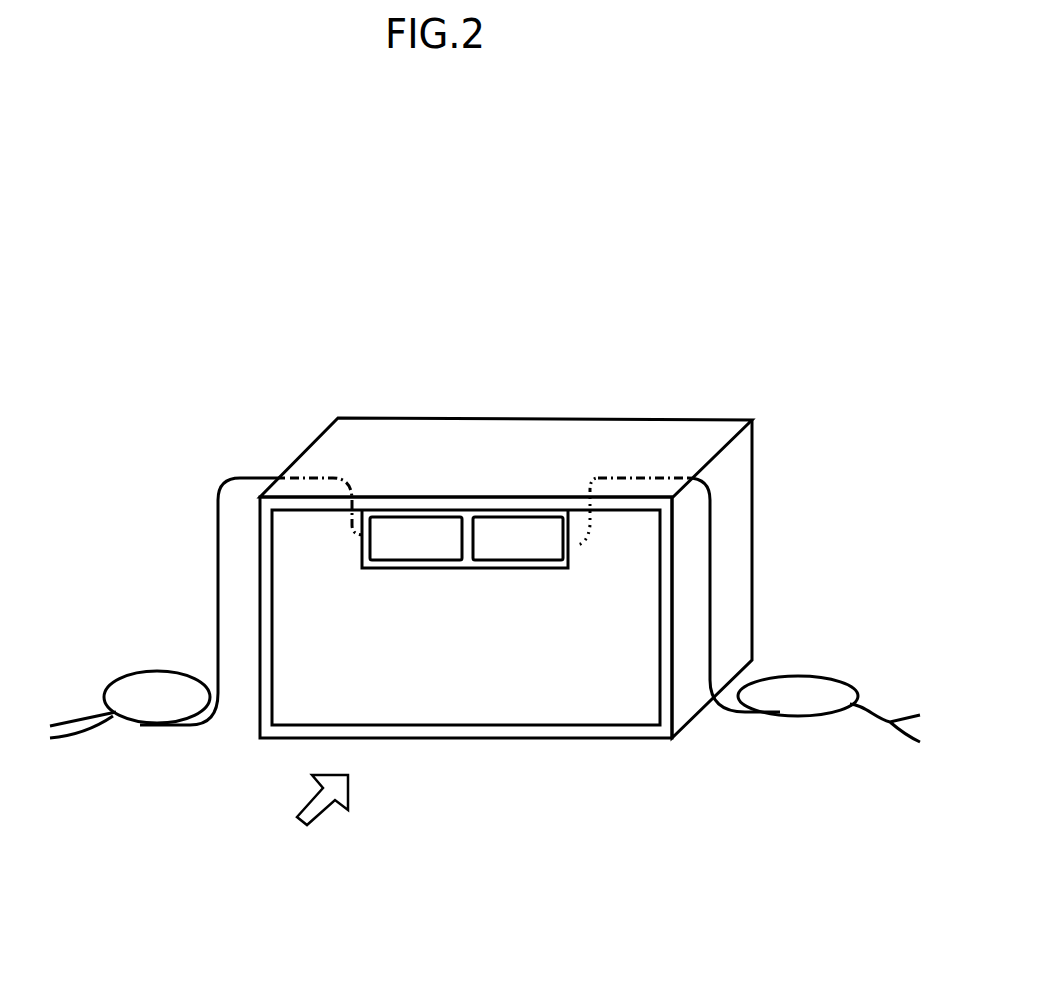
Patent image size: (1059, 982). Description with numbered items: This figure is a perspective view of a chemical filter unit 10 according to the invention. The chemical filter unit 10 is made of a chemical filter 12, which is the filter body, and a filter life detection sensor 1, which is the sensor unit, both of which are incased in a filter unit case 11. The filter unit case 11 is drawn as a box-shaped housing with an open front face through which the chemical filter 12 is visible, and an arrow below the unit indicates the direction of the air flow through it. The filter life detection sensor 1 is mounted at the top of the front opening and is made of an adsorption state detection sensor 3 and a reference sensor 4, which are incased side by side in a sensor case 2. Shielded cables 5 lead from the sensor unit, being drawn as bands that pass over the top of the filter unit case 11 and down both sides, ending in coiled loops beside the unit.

The filter life detection sensor 1 is at (393, 330).
The sensor case 2 is at (468, 530).
The adsorption state detection sensor 3 is at (408, 535).
The reference sensor 4 is at (537, 533).
The shielded cables 5 is at (217, 600).
The chemical filter unit 10 is at (237, 373).
The filter unit case 11 is at (673, 445).
The chemical filter 12 is at (517, 662).